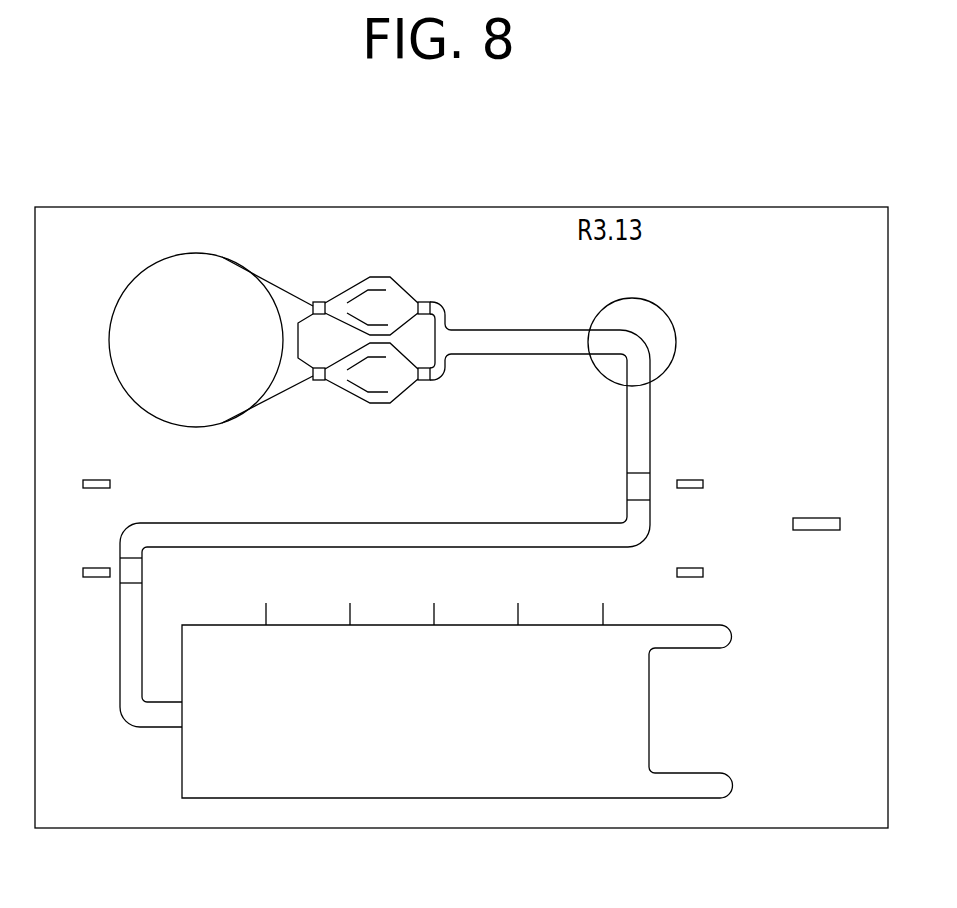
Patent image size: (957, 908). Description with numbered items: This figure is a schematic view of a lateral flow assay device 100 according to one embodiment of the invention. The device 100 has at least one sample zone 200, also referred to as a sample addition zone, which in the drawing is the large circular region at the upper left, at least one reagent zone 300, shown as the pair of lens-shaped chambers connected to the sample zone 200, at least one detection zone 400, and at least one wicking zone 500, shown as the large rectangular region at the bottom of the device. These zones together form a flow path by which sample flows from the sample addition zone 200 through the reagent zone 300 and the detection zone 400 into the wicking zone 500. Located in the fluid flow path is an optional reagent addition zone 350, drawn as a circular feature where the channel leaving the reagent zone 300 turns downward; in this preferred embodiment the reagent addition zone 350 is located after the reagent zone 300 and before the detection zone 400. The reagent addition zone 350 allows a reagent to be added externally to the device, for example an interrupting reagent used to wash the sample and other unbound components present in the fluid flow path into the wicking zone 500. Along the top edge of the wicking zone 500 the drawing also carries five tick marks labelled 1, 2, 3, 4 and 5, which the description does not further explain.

The assay device 100 is at (137, 183).
The sample zone 200 is at (208, 335).
The reagent zone 300 is at (380, 375).
The reagent addition zone 350 is at (655, 328).
The detection zone 400 is at (525, 535).
The wicking zone 500 is at (340, 740).
The scale mark 1 is at (266, 597).
The scale mark 2 is at (350, 597).
The scale mark 3 is at (434, 597).
The scale mark 4 is at (518, 597).
The scale mark 5 is at (603, 597).